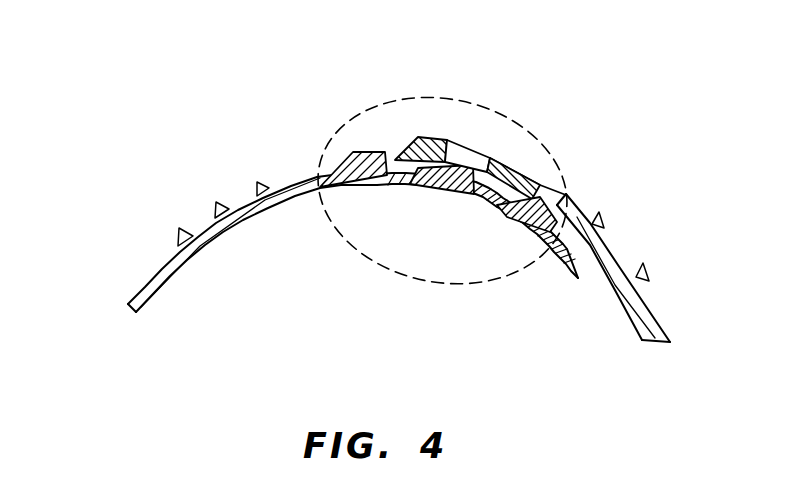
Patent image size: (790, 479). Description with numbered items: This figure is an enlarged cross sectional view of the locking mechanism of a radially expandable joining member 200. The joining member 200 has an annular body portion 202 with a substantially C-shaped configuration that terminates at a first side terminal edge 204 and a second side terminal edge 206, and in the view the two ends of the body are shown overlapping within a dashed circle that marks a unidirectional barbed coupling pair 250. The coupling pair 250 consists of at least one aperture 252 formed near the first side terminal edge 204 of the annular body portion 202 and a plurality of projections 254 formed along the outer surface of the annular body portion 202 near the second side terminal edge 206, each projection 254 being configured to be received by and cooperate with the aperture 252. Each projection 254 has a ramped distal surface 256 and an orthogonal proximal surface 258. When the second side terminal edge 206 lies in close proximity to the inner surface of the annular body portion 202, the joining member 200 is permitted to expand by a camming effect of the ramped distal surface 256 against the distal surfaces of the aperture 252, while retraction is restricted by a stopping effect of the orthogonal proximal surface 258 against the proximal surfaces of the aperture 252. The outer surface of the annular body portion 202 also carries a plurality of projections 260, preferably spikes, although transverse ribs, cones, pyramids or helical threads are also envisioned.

The radially expandable joining member 200 is at (130, 57).
The annular body portion 202 is at (147, 291).
The first side terminal edge 204 is at (416, 138).
The second side terminal edge 206 is at (556, 242).
The unidirectional barbed coupling pair 250 is at (535, 112).
The aperture 252 is at (563, 199).
The projections 254 is at (367, 150).
The ramped distal surface 256 is at (346, 163).
The orthogonal proximal surface 258 is at (393, 156).
The projections 260 is at (215, 211).